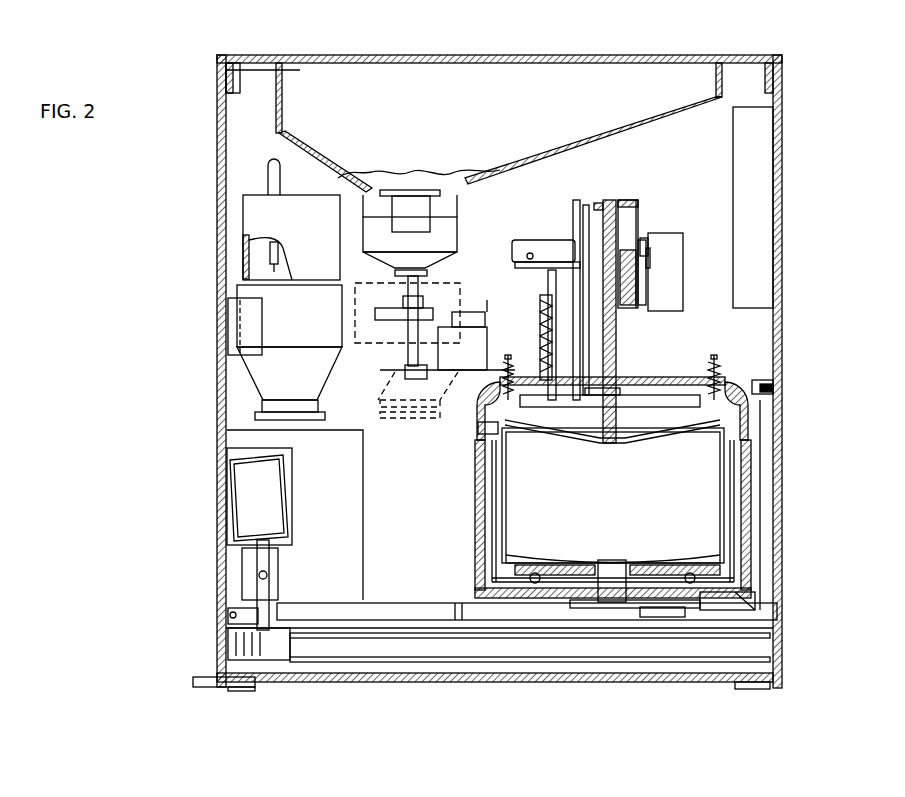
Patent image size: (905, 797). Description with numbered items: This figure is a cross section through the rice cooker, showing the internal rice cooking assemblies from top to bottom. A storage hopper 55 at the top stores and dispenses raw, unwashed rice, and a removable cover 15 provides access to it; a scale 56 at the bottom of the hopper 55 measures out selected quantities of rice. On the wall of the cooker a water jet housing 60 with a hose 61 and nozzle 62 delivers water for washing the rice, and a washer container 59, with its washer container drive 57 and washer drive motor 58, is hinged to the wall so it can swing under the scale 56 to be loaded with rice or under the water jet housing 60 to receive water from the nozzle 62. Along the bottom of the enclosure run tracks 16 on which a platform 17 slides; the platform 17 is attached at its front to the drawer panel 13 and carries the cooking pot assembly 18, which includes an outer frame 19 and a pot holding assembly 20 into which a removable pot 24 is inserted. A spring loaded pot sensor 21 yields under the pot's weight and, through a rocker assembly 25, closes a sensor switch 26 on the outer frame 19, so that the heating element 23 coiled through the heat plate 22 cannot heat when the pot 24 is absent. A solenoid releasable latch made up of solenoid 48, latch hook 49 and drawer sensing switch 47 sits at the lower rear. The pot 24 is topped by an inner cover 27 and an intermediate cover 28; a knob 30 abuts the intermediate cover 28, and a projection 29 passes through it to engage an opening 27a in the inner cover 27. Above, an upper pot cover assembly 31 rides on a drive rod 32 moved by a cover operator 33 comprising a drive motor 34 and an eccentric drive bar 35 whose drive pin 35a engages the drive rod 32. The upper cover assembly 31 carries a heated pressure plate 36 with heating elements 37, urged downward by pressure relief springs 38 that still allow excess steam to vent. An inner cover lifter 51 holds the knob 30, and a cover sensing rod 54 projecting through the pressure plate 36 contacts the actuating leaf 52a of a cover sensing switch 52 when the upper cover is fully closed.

The drawer panel 13 is at (782, 525).
The cover 15 is at (320, 55).
The tracks 16 is at (370, 660).
The platform 17 is at (622, 630).
The cooking pot assembly 18 is at (760, 578).
The outer frame 19 is at (752, 478).
The pot holding assembly 20 is at (745, 555).
The pot sensor 21 is at (600, 592).
The heat plate 22 is at (648, 598).
The heating element 23 is at (700, 610).
The removable pot 24 is at (505, 600).
The rocker assembly 25 is at (655, 618).
The sensor switch 26 is at (775, 630).
The inner cover 27 is at (532, 440).
The opening 27a is at (635, 445).
The intermediate cover 28 is at (584, 437).
The projection 29 is at (610, 445).
The knob 30 is at (618, 397).
The upper pot cover assembly 31 is at (775, 387).
The drive rod 32 is at (620, 330).
The cover operator 33 is at (620, 205).
The drive motor 34 is at (670, 250).
The eccentric drive bar 35 is at (660, 265).
The drive pin 35a is at (640, 245).
The heated pressure plate 36 is at (480, 430).
The heating elements 37 is at (530, 385).
The pressure relief springs 38 is at (722, 385).
The drawer sensing switch 47 is at (240, 565).
The solenoid 48 is at (245, 495).
The latch hook 49 is at (232, 625).
The inner cover lifter 51 is at (548, 285).
The cover sensing switch 52 is at (520, 245).
The actuating leaf 52a is at (585, 268).
The cover sensing rod 54 is at (578, 215).
The storage hopper 55 is at (605, 128).
The scale 56 is at (382, 214).
The washer container drive 57 is at (390, 300).
The washer drive motor 58 is at (490, 330).
The washer container 59 is at (250, 325).
The water jet housing 60 is at (248, 195).
The hose 61 is at (270, 160).
The nozzle 62 is at (268, 265).